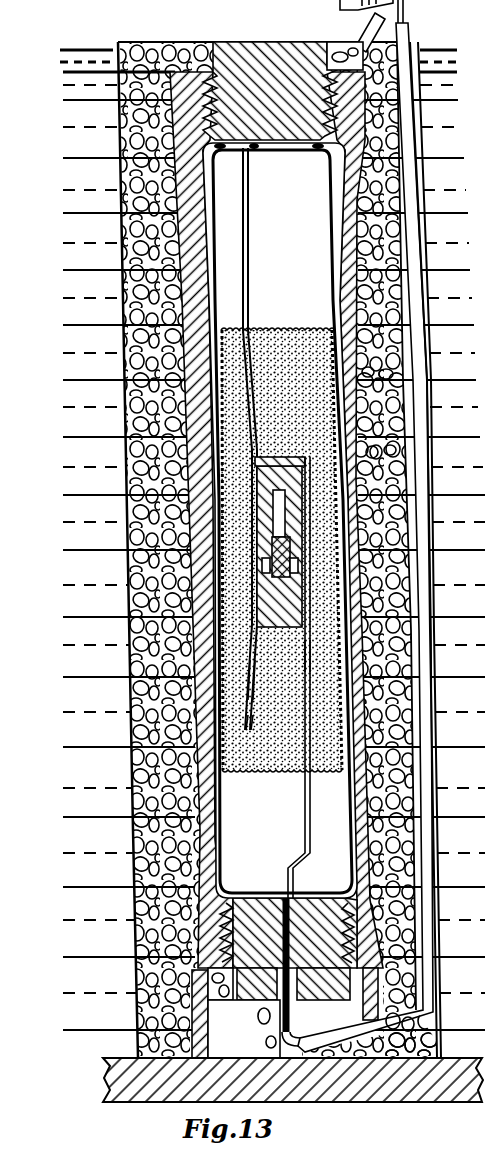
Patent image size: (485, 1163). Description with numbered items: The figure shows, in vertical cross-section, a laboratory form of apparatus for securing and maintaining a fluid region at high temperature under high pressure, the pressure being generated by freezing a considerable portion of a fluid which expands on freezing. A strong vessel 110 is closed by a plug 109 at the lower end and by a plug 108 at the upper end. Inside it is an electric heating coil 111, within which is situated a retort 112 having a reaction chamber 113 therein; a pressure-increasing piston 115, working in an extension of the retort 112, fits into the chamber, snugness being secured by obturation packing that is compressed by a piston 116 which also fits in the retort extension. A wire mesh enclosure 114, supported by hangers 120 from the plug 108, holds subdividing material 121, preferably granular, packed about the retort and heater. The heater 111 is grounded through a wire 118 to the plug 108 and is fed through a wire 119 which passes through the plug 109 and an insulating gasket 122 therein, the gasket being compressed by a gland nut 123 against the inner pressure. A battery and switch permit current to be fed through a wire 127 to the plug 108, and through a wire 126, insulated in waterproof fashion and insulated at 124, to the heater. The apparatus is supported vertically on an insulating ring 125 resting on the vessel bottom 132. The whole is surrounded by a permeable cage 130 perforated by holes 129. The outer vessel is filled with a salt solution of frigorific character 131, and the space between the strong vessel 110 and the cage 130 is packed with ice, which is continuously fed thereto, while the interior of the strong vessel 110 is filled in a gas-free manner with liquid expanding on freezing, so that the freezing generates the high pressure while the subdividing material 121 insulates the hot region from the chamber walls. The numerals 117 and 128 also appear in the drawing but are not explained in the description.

The plug 108 is at (227, 42).
The plug 109 is at (244, 1013).
The strong vessel 110 is at (350, 276).
The electric heating coil 111 is at (260, 452).
The retort 112 is at (278, 455).
The reaction chamber 113 is at (293, 455).
The wire mesh enclosure 114 is at (258, 455).
The pressure-increasing piston 115 is at (302, 662).
The piston 116 is at (250, 690).
The outlet 117 is at (247, 735).
The wire 118 is at (250, 170).
The wire 119 is at (305, 804).
The hangers 120 is at (213, 195).
The subdividing material 121 is at (275, 328).
The insulating gasket 122 is at (233, 955).
The gland nut 123 is at (311, 1020).
The insulation 124 is at (266, 1043).
The insulating ring 125 is at (287, 1012).
The wire 126 is at (403, 357).
The wire 127 is at (378, 20).
The gravel layer 128 is at (406, 437).
The holes 129 is at (426, 349).
The permeable cage 130 is at (437, 526).
The salt solution of frigorific character 131 is at (452, 480).
The vessel bottom 132 is at (385, 1088).